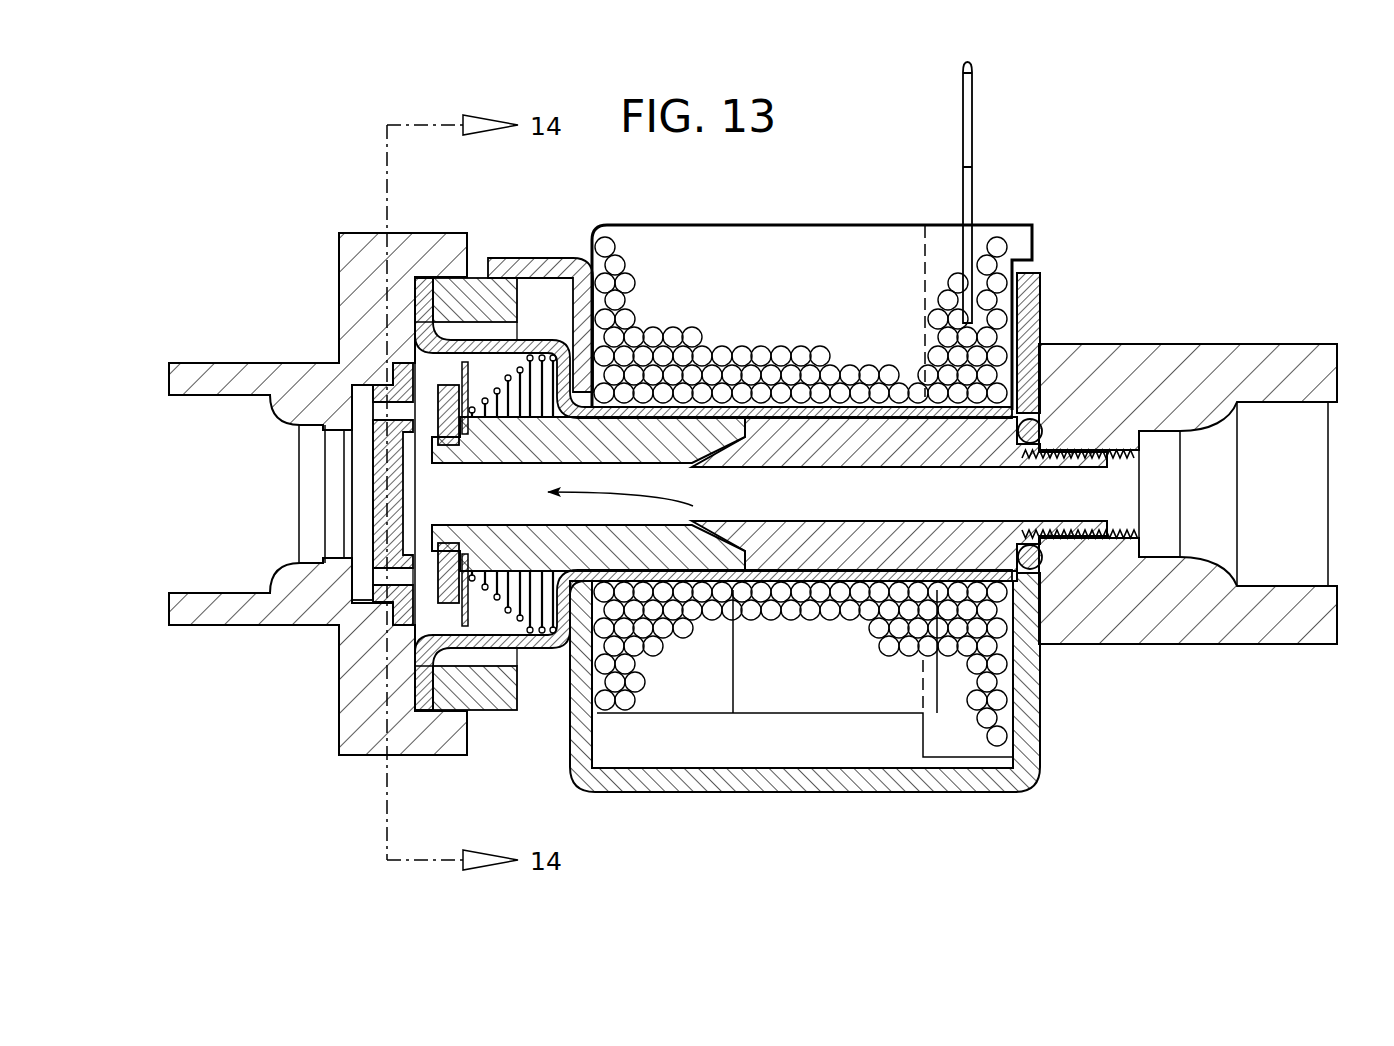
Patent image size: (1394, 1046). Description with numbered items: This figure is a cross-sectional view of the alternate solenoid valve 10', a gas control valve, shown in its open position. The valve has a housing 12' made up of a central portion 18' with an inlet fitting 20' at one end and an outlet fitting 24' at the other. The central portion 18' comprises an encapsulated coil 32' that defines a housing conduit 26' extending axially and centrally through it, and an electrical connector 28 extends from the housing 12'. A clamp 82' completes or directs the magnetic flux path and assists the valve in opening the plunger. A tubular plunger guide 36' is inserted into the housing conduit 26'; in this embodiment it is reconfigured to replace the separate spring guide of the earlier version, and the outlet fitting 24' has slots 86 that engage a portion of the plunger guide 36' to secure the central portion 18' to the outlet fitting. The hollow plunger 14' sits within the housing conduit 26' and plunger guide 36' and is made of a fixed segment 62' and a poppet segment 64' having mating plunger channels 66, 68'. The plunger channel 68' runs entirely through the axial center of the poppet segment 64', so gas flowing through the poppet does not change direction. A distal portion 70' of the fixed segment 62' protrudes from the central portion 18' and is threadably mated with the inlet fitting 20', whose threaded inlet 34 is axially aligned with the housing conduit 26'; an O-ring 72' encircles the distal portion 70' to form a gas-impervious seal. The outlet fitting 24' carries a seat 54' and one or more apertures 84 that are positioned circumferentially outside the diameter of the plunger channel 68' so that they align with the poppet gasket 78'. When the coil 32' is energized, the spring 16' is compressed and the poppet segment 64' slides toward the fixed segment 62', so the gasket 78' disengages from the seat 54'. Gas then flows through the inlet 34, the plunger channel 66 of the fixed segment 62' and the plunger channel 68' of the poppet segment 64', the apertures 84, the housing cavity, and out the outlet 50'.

The solenoid valve 10' is at (268, 143).
The housing 12' is at (1188, 450).
The hollow plunger 14' is at (805, 711).
The spring 16' is at (512, 562).
The central portion 18' is at (812, 254).
The inlet fitting 20' is at (1188, 463).
The outlet fitting 24' is at (318, 494).
The housing conduit 26' is at (939, 714).
The electrical connector 28 is at (986, 95).
The encapsulated coil 32' is at (810, 510).
The inlet 34 is at (1290, 540).
The plunger guide 36' is at (713, 514).
The outlet 50' is at (146, 466).
The seat 54' is at (358, 461).
The fixed segment 62' is at (899, 375).
The poppet segment 64' is at (588, 375).
The plunger channel 66 is at (1010, 490).
The plunger channel 68' is at (734, 714).
The distal portion 70' is at (1080, 407).
The O-ring 72' is at (1053, 574).
The poppet gasket 78' is at (376, 535).
The clamp 82' is at (1048, 329).
The apertures 84 is at (420, 575).
The slots 86 is at (421, 278).